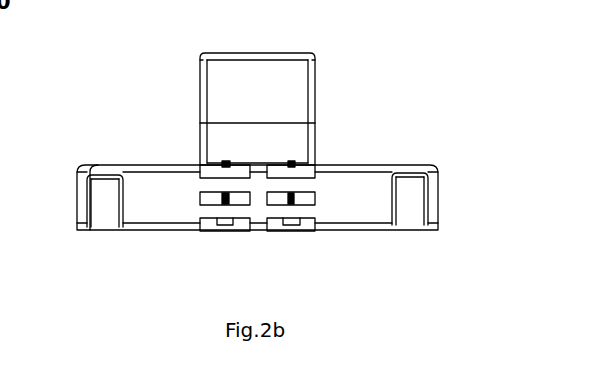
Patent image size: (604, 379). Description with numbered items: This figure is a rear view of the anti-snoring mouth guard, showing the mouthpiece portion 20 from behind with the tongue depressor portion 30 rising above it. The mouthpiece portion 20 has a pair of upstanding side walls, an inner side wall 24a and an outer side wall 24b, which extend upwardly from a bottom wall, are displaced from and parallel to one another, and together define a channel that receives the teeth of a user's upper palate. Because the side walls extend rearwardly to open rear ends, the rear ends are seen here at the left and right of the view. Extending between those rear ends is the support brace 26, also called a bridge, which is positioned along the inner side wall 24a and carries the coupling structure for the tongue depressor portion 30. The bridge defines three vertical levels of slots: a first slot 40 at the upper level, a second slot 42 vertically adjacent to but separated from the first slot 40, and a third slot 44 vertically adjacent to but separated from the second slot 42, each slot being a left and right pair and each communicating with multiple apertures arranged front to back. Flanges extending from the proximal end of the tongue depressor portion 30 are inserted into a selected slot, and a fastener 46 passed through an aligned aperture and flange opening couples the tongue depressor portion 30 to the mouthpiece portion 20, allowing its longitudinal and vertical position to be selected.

The mouthpiece portion 20 is at (447, 153).
The inner side wall 24a is at (120, 210).
The outer side wall 24b is at (77, 205).
The support brace 26 is at (370, 188).
The tongue depressor portion 30 is at (186, 76).
The first slot 40 is at (291, 171).
The second slot 42 is at (315, 199).
The third slot 44 is at (210, 222).
The fastener 46 is at (223, 195).